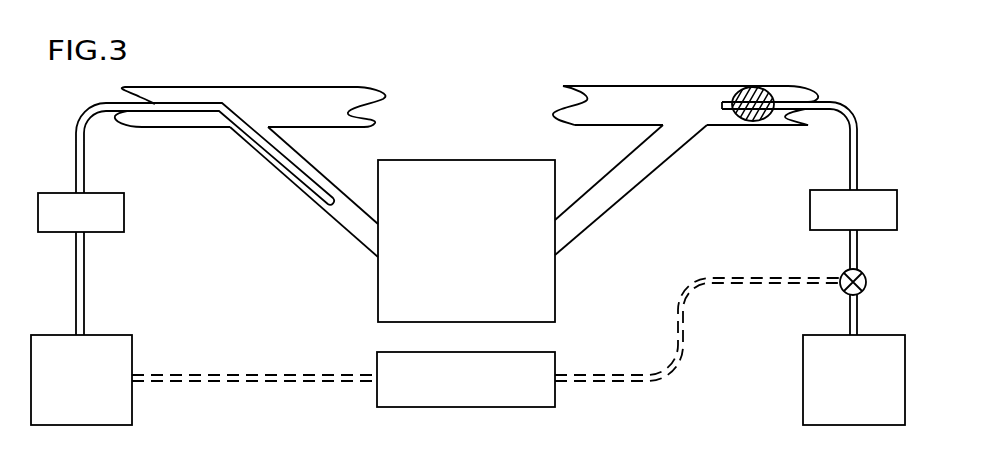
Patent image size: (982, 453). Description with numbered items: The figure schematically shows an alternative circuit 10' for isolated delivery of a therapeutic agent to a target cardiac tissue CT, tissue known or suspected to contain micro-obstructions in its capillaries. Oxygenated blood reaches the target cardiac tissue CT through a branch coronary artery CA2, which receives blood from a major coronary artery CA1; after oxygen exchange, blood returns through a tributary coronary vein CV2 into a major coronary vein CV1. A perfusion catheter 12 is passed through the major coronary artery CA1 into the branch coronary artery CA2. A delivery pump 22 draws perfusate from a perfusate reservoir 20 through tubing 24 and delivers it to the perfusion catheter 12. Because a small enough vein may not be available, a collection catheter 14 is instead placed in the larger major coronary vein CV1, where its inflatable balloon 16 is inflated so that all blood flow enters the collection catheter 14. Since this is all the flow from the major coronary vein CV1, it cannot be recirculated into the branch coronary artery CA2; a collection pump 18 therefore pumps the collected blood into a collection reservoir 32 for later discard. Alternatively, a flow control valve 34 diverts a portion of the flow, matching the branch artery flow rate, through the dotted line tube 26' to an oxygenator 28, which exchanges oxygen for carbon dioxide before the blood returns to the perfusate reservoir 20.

The alternative circuit 10' is at (214, 323).
The perfusion catheter 12 is at (125, 103).
The collection catheter 14 is at (800, 96).
The inflatable balloon 16 is at (760, 88).
The collection pump 18 is at (882, 188).
The perfusate reservoir 20 is at (50, 333).
The delivery pump 22 is at (125, 212).
The tubing 24 is at (85, 278).
The dotted line tube 26' is at (486, 309).
The oxygenator 28 is at (557, 358).
The collection reservoir 32 is at (888, 333).
The flow control valve 34 is at (867, 275).
The major coronary artery CA1 is at (238, 87).
The branch coronary artery CA2 is at (320, 206).
The major coronary vein CV1 is at (676, 85).
The tributary coronary vein CV2 is at (600, 218).
The target cardiac tissue CT is at (555, 292).